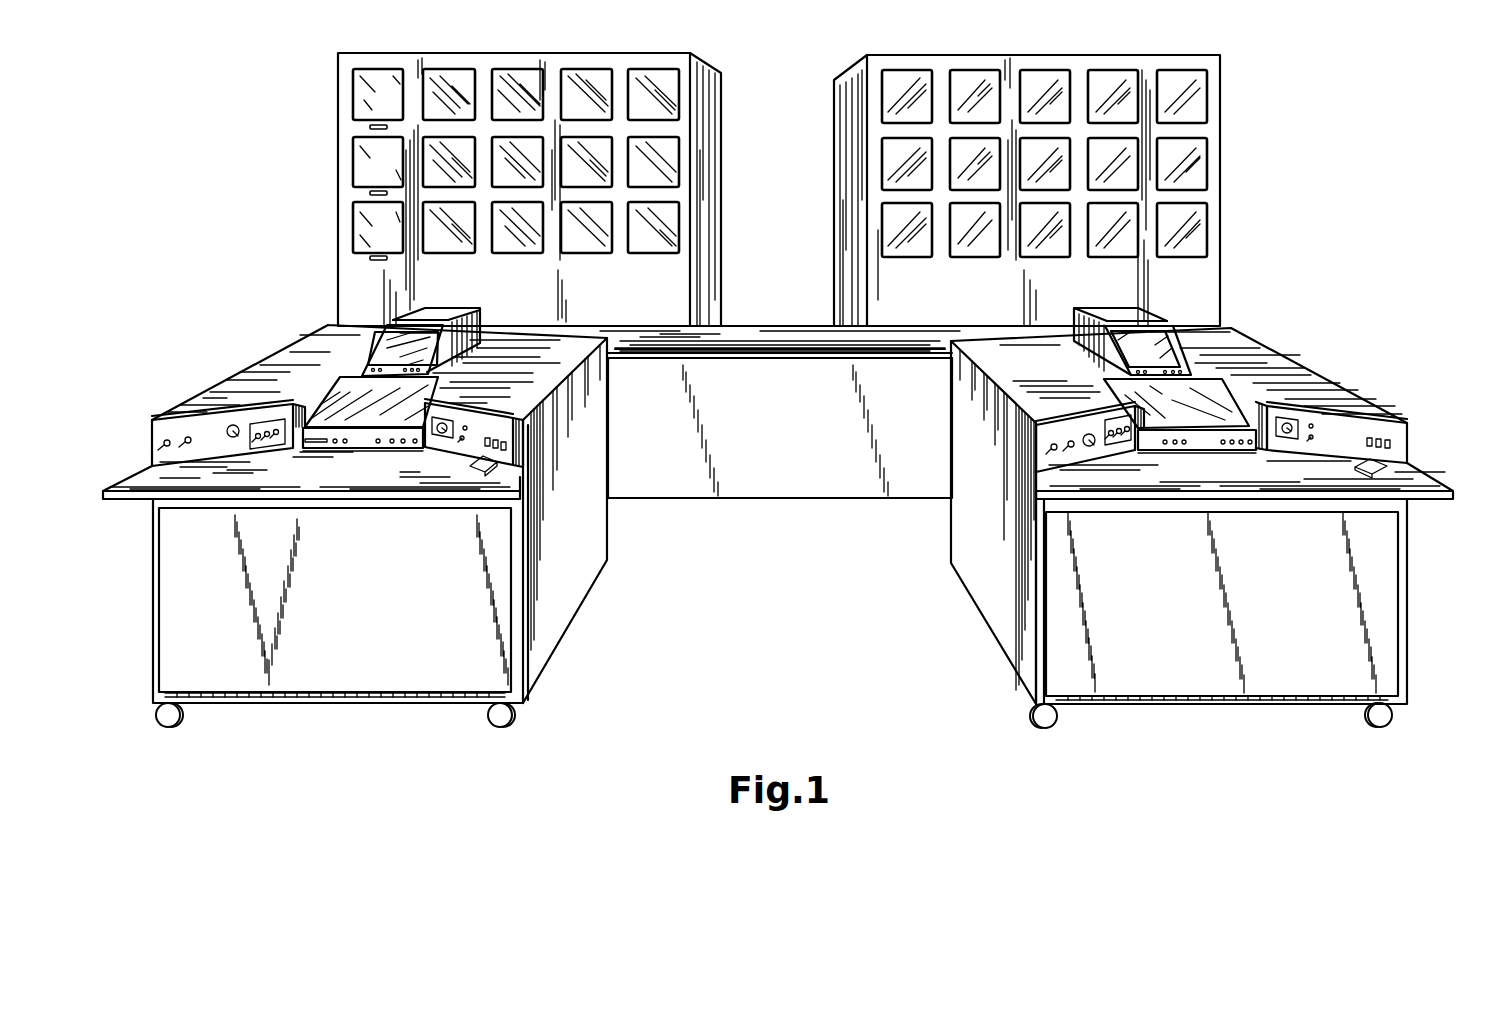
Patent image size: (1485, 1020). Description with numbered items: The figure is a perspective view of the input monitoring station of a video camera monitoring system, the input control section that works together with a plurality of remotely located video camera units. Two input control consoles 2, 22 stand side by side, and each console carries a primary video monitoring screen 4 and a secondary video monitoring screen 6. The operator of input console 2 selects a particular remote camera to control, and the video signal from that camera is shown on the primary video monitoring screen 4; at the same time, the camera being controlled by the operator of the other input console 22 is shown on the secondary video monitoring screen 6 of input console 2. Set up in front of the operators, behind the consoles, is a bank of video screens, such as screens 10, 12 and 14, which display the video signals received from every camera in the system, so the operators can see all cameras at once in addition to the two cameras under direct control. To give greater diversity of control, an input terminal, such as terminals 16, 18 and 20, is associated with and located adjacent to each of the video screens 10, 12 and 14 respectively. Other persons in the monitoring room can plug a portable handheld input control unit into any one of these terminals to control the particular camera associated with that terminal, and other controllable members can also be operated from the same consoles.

The input control console 2 is at (1202, 518).
The primary video monitoring screen 4 is at (1184, 413).
The secondary video monitoring screen 6 is at (1153, 355).
The video screen 10 is at (388, 102).
The video screen 12 is at (398, 183).
The video screen 14 is at (389, 237).
The input terminal 16 is at (368, 128).
The input terminal 18 is at (368, 193).
The input terminal 20 is at (368, 258).
The input control console 22 is at (343, 482).